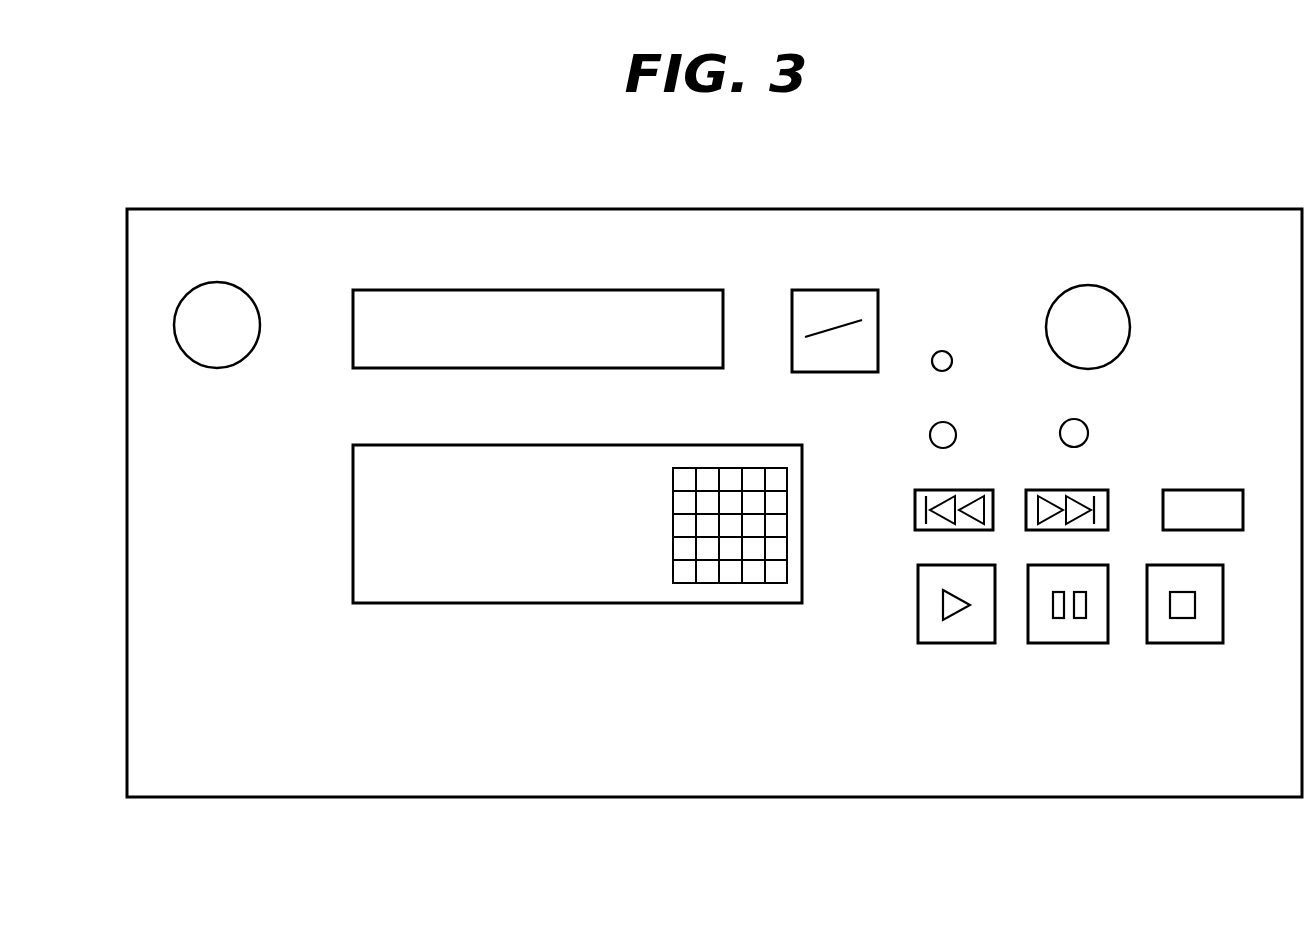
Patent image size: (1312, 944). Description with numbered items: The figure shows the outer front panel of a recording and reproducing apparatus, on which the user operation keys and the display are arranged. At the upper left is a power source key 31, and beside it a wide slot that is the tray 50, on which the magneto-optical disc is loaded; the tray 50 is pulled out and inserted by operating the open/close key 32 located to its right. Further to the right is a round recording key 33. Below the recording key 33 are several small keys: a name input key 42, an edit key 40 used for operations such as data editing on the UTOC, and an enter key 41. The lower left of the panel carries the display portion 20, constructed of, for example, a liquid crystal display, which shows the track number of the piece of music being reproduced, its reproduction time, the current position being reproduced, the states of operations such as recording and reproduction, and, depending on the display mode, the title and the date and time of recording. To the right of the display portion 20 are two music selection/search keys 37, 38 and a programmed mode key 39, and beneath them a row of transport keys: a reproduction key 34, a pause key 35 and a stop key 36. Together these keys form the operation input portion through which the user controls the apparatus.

The display portion 20 is at (725, 605).
The power source key 31 is at (243, 299).
The open/close key 32 is at (838, 290).
The recording key 33 is at (1128, 308).
The reproduction key 34 is at (953, 645).
The pause key 35 is at (1075, 645).
The stop key 36 is at (1200, 645).
The music selection/search key 37 is at (915, 514).
The music selection/search key 38 is at (1108, 498).
The programmed mode key 39 is at (1238, 490).
The edit key 40 is at (930, 436).
The enter key 41 is at (1088, 431).
The name input key 42 is at (952, 360).
The tray 50 is at (577, 291).